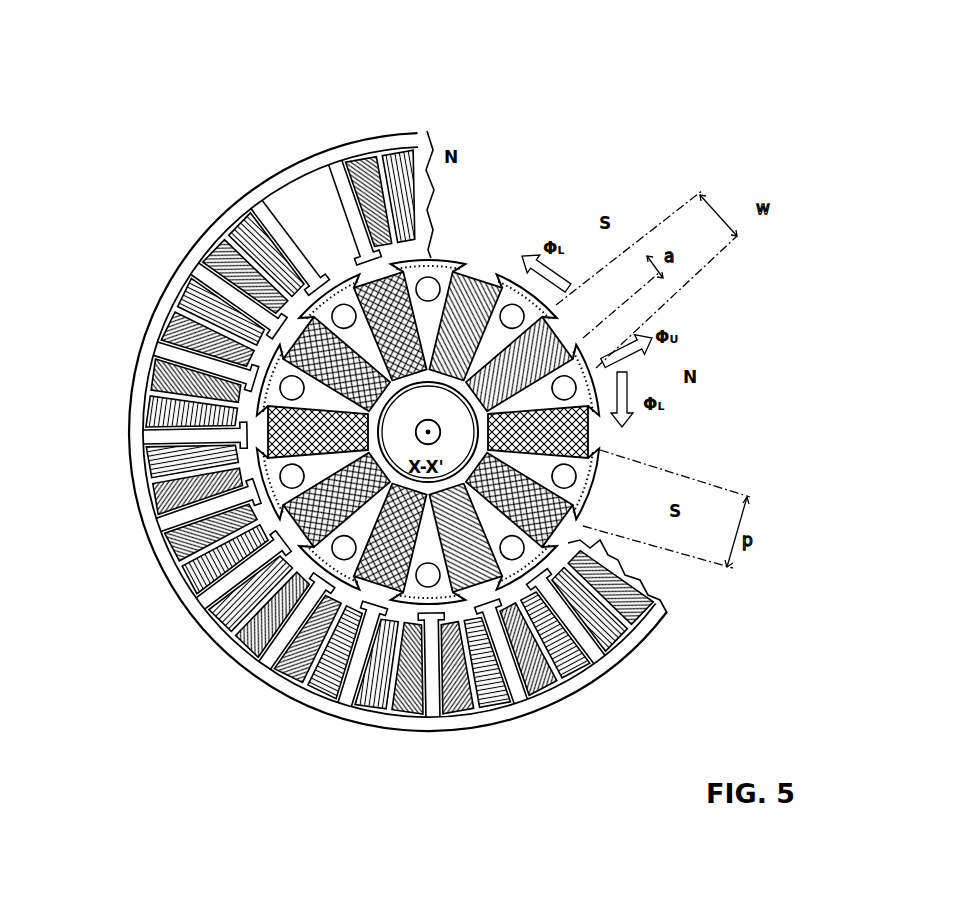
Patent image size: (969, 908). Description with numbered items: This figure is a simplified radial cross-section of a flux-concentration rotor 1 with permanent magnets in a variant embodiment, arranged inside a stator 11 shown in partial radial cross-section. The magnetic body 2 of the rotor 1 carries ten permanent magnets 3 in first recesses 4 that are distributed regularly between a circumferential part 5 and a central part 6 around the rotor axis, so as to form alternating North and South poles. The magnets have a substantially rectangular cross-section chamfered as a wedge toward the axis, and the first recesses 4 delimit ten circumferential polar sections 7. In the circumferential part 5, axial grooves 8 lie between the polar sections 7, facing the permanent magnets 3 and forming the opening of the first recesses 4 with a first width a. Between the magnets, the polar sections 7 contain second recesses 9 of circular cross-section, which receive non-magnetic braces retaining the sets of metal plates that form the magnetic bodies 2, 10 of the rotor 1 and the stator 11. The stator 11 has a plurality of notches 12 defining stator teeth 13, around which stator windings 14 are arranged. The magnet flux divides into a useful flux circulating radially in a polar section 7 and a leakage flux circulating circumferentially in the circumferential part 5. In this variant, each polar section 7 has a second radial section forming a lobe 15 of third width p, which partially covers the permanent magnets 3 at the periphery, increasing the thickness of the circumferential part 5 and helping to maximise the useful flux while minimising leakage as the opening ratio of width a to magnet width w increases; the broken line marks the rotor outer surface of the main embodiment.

The rotor 1 is at (565, 130).
The magnetic body 2 is at (385, 262).
The permanent magnets 3 is at (310, 280).
The first recesses 4 is at (292, 300).
The circumferential part 5 is at (425, 263).
The central part 6 is at (393, 406).
The polar sections 7 is at (258, 392).
The axial grooves 8 is at (560, 332).
The second recesses 9 is at (287, 478).
The magnetic body of the stator 10 is at (597, 684).
The stator 11 is at (170, 632).
The notches 12 is at (280, 668).
The stator teeth 13 is at (358, 668).
The stator windings 14 is at (490, 710).
The lobe 15 is at (501, 275).